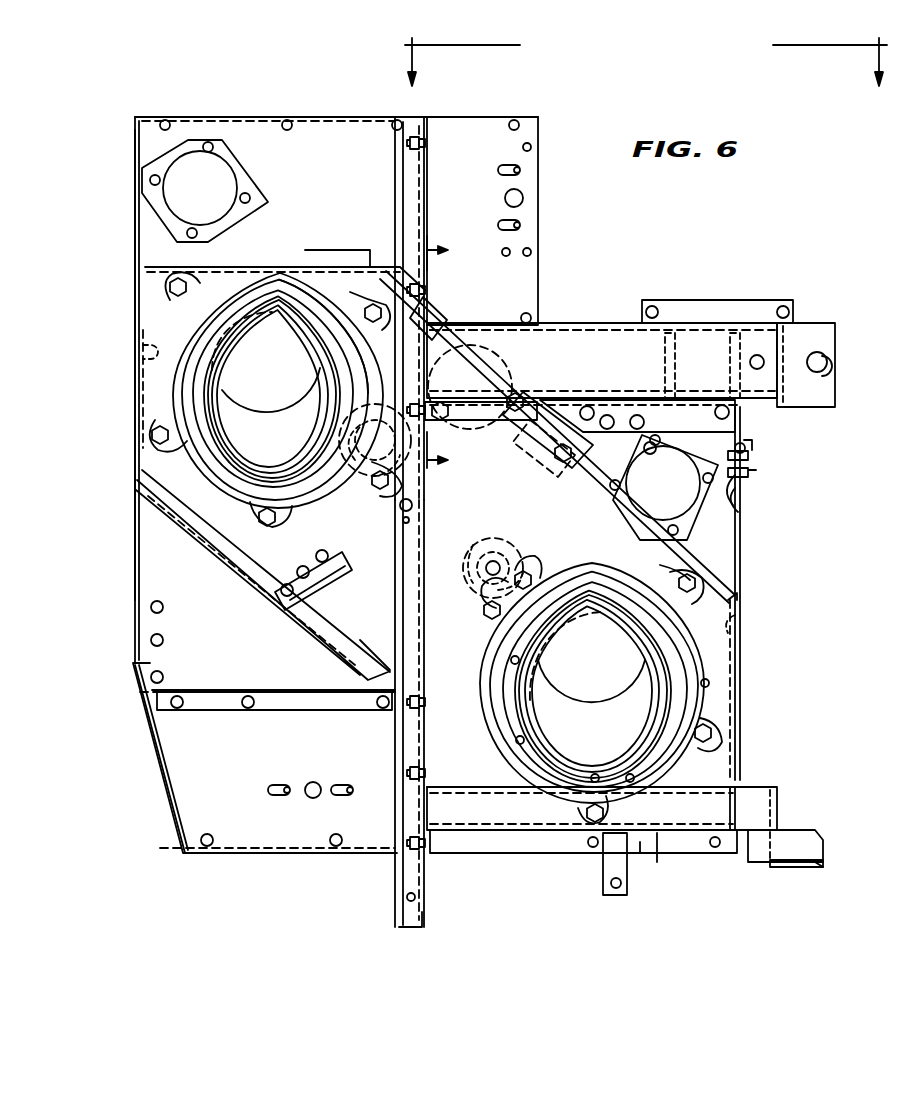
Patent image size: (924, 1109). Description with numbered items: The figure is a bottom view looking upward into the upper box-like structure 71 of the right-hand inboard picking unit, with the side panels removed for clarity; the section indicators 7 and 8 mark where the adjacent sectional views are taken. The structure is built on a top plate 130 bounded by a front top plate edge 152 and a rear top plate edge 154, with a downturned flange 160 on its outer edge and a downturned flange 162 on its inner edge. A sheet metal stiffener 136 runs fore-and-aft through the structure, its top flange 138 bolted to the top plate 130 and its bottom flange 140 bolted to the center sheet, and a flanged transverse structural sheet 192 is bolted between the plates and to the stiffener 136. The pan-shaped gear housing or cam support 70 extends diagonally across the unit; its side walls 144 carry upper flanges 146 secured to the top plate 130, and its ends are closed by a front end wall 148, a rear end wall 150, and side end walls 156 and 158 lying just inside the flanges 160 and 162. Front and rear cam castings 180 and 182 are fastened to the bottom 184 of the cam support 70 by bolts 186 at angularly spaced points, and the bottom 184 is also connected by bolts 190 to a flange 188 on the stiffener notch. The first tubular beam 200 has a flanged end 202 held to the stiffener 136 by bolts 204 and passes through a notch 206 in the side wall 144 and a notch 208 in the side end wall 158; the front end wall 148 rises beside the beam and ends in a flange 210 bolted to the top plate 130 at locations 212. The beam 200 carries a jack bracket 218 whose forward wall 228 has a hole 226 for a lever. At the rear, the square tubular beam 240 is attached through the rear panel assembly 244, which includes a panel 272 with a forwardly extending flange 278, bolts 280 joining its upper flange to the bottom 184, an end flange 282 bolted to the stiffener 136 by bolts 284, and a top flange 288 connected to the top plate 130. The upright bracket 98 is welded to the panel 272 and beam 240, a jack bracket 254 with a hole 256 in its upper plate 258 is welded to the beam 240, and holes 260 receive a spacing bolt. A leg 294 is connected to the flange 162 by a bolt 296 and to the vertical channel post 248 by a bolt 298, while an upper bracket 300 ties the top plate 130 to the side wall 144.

The section line 7- 7 is at (445, 355).
The section line 8- 8 is at (646, 65).
The gear housing or cam support 70 is at (362, 648).
The upper box-like structure 71 is at (158, 800).
The upright bracket 98 is at (735, 383).
The top plate 130 is at (227, 624).
The sheet metal stiffener 136 is at (425, 170).
The top flange 138 is at (420, 748).
The bottom flange 140 is at (410, 204).
The side wall 144 is at (315, 606).
The upper flange 146 is at (230, 540).
The front end wall 148 is at (661, 861).
The rear end wall 150 is at (245, 266).
The front top plate edge 152 is at (360, 855).
The rear top plate edge 154 is at (297, 115).
The side end wall 156 is at (143, 353).
The side end wall 158 is at (735, 630).
The downturned flange 160 is at (135, 240).
The downturned flange 162 is at (740, 672).
The front cam casting 180 is at (490, 656).
The rear cam casting 182 is at (288, 516).
The bottom of the cam support 184 is at (594, 539).
The bolts 186 is at (372, 300).
The flange 188 is at (386, 642).
The bolts 190 is at (413, 506).
The flanged transverse structural sheet 192 is at (238, 660).
The first tubular beam 200 is at (520, 832).
The flanged end 202 is at (420, 832).
The bolts 204 is at (430, 850).
The notch 206 is at (542, 813).
The notch 208 is at (748, 798).
The flange 210 is at (682, 858).
The bolt locations 212 is at (592, 848).
The jack bracket 218 is at (800, 845).
The hole 226 is at (800, 866).
The forward wall 228 is at (818, 868).
The square tubular beam 240 is at (600, 322).
The rear panel assembly 244 is at (626, 302).
The vertical channel post 248 is at (752, 472).
The jack bracket 254 is at (835, 348).
The hole 256 is at (824, 366).
The upper plate 258 is at (828, 380).
The holes 260 is at (757, 370).
The panel 272 is at (632, 390).
The forwardly extending flange 278 is at (476, 422).
The bolts 280 is at (470, 387).
The end flange 282 is at (388, 478).
The bolts 284 is at (330, 336).
The top flange 288 is at (697, 426).
The leg 294 is at (745, 488).
The bolt 296 is at (740, 500).
The bolt 298 is at (750, 456).
The upper bracket 300 is at (546, 450).